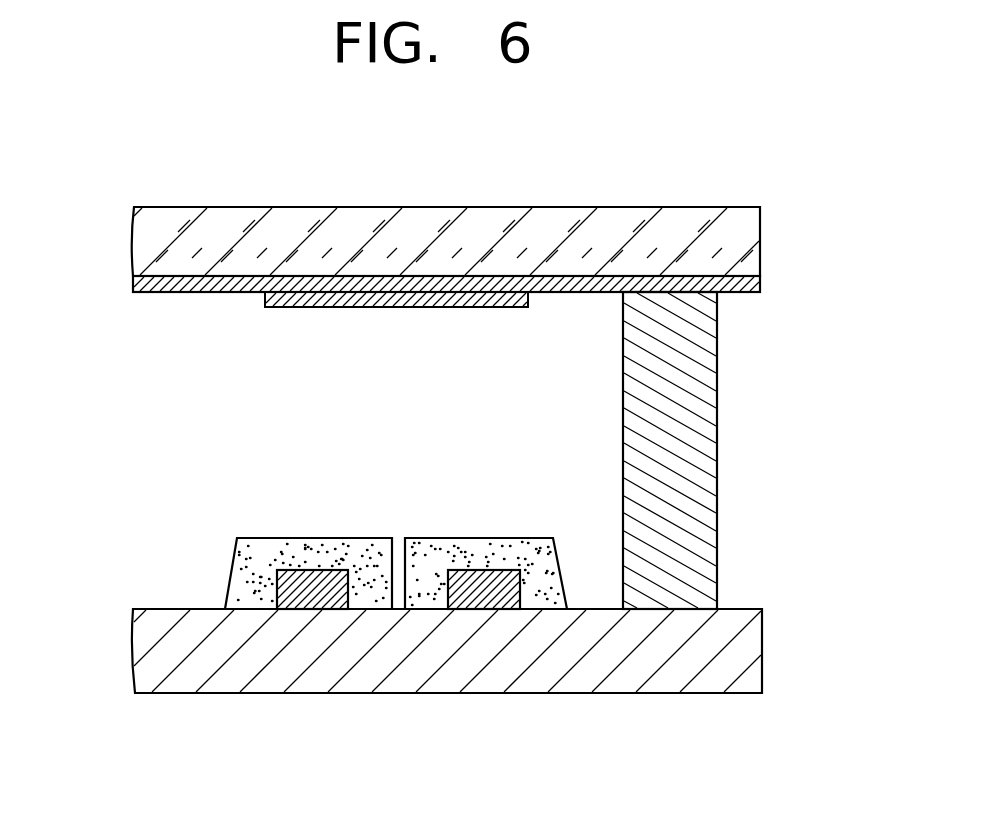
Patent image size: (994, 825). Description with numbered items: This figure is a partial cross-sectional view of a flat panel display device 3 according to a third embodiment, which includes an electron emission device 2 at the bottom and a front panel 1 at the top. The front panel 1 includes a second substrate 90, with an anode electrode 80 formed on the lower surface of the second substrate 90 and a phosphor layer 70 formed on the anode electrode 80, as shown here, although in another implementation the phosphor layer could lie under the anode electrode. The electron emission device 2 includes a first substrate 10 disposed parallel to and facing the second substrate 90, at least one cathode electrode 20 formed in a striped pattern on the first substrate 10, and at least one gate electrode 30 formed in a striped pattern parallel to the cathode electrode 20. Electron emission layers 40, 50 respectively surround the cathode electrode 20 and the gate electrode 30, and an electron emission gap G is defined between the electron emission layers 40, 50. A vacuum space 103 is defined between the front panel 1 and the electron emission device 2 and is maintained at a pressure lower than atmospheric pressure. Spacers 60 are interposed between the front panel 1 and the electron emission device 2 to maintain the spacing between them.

The first substrate 10 is at (750, 652).
The cathode electrode 20 is at (313, 578).
The gate electrode 30 is at (483, 578).
The electron emission layer 40 is at (252, 547).
The electron emission layer 50 is at (538, 548).
The spacer 60 is at (700, 452).
The phosphor layer 70 is at (287, 307).
The anode electrode 80 is at (752, 285).
The second substrate 90 is at (747, 246).
The vacuum space 103 is at (429, 400).
The electron emission gap G is at (400, 528).
The front panel 1 is at (118, 316).
The electron emission device 2 is at (133, 566).
The flat panel display device 3 is at (55, 405).